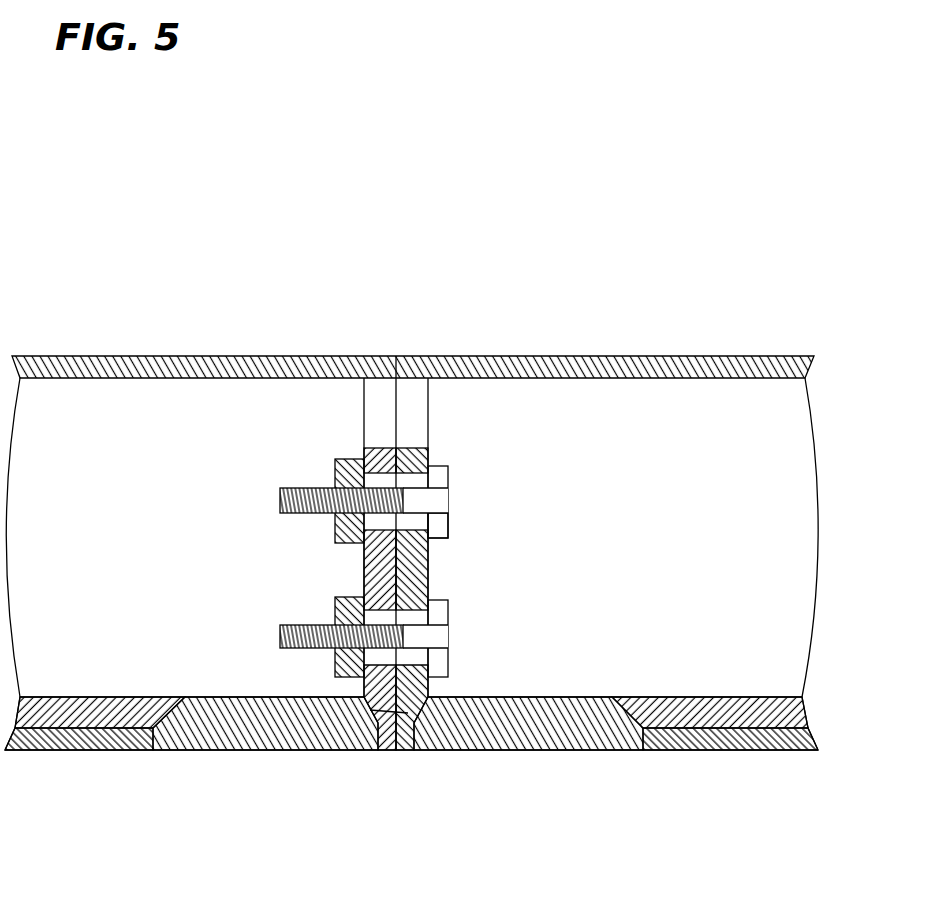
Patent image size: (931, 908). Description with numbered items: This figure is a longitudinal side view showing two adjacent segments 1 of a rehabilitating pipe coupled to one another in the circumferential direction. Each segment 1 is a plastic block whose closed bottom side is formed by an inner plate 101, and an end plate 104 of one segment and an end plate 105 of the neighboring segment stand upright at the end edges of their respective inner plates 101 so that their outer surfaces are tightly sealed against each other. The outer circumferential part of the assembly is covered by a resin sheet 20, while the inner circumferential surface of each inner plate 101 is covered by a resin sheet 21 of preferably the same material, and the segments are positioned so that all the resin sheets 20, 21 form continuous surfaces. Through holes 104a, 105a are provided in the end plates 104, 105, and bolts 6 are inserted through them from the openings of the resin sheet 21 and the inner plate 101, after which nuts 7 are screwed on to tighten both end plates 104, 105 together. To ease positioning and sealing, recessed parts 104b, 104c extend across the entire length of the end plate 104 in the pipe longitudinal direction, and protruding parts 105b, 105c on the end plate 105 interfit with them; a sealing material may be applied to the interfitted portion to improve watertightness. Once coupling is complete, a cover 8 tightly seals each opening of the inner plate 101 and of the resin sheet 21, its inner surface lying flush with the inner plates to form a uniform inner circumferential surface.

The segment 1 is at (200, 770).
The bolt 6 is at (438, 525).
The nut 7 is at (336, 542).
The cover 8 is at (247, 750).
The resin sheet 20 is at (233, 368).
The resin sheet 21 is at (78, 750).
The inner plate 101 is at (121, 697).
The end plate 104 is at (415, 403).
The through hole 104a is at (412, 484).
The recessed part 104b is at (400, 570).
The recessed part 104c is at (430, 697).
The end plate 105 is at (386, 412).
The through hole 105a is at (383, 484).
The protruding part 105b is at (400, 567).
The protruding part 105c is at (373, 707).